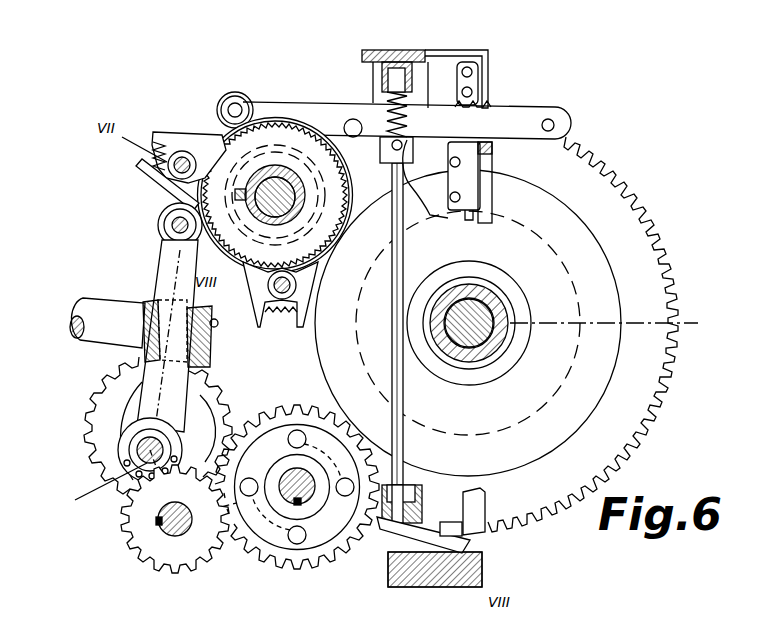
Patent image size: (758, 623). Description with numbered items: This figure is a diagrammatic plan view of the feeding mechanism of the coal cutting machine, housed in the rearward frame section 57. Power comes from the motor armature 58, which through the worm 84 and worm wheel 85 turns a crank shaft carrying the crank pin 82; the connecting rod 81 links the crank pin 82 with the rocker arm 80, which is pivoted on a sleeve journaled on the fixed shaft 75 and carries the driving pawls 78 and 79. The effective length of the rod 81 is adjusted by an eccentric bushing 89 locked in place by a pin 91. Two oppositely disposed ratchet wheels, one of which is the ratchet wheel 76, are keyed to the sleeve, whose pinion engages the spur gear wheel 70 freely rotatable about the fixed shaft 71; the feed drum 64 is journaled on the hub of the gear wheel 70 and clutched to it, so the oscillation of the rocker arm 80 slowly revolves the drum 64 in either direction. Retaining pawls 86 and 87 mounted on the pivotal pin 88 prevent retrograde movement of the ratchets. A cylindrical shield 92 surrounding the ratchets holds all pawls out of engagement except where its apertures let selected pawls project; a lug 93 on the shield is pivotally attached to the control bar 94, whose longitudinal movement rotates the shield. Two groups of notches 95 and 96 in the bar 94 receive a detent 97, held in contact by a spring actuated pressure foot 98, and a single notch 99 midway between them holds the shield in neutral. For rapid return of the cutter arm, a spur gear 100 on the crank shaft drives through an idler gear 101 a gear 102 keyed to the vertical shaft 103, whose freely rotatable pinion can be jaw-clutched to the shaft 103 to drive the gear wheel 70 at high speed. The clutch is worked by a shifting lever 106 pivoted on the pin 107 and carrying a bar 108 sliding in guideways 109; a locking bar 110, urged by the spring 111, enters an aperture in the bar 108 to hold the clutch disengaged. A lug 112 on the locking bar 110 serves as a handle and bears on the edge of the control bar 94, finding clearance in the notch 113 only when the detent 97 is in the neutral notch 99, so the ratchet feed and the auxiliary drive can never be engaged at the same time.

The rearward frame section 57 is at (412, 53).
The armature 58 is at (97, 305).
The drum 64 is at (578, 247).
The spur gear wheel 70 is at (660, 413).
The shaft 71 is at (485, 305).
The shaft 75 is at (270, 168).
The ratchet wheel 76 is at (279, 143).
The pawl 78 is at (205, 138).
The pawl 79 is at (177, 182).
The rocker arm 80 is at (160, 205).
The connecting rod 81 is at (162, 286).
The crank pin 82 is at (140, 445).
The worm 84 is at (200, 343).
The worm wheel 85 is at (98, 390).
The pawl 86 is at (303, 302).
The pawl 87 is at (257, 302).
The pivotal pin 88 is at (283, 299).
The eccentric bushing 89 is at (99, 489).
The pin 91 is at (120, 497).
The cylindrical shield 92 is at (300, 214).
The lug 93 is at (235, 98).
The control bar 94 is at (330, 113).
The group of notches 95 is at (492, 103).
The group of notches 96 is at (373, 103).
The detent 97 is at (468, 82).
The spring actuated pressure foot 98 is at (495, 150).
The single notch 99 is at (428, 108).
The spur gear 100 is at (115, 408).
The idler gear 101 is at (195, 570).
The gear 102 is at (280, 565).
The vertical shaft 103 is at (294, 470).
The shifting lever 106 is at (422, 560).
The pin 107 is at (480, 563).
The bar 108 is at (393, 517).
The guideways 109 is at (420, 507).
The locking bar 110 is at (405, 405).
The spring 111 is at (407, 97).
The lug 112 is at (395, 153).
The notch 113 is at (352, 123).